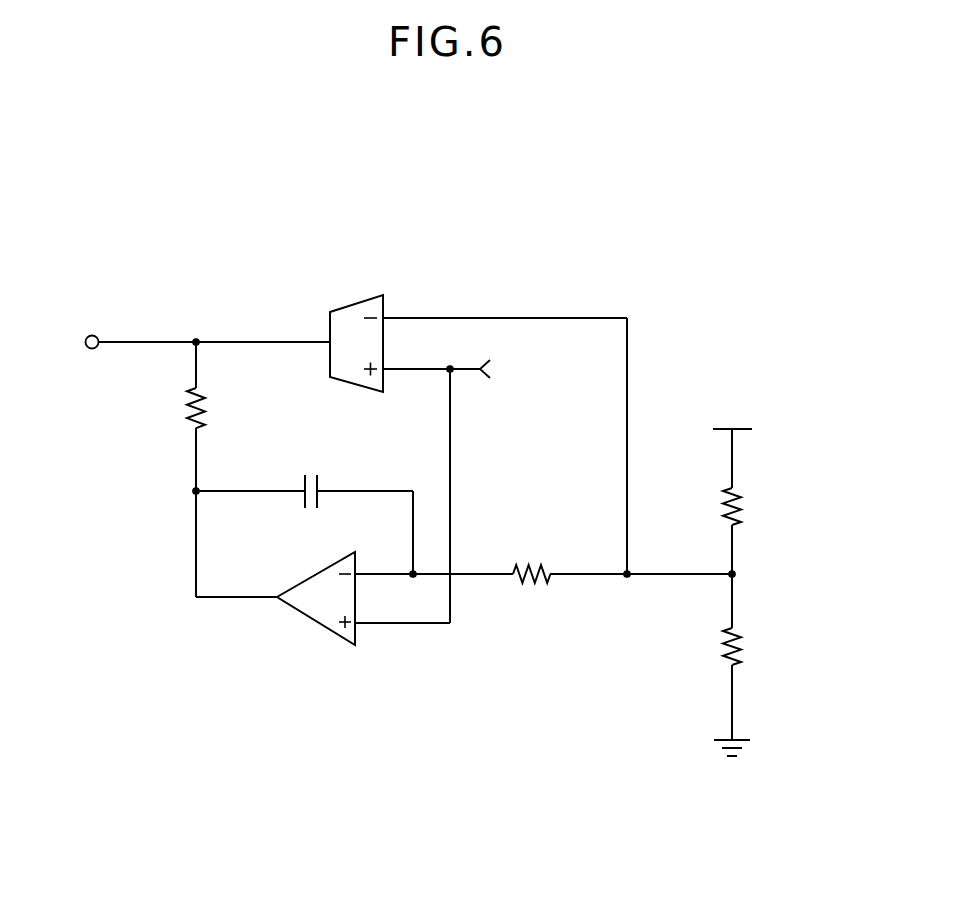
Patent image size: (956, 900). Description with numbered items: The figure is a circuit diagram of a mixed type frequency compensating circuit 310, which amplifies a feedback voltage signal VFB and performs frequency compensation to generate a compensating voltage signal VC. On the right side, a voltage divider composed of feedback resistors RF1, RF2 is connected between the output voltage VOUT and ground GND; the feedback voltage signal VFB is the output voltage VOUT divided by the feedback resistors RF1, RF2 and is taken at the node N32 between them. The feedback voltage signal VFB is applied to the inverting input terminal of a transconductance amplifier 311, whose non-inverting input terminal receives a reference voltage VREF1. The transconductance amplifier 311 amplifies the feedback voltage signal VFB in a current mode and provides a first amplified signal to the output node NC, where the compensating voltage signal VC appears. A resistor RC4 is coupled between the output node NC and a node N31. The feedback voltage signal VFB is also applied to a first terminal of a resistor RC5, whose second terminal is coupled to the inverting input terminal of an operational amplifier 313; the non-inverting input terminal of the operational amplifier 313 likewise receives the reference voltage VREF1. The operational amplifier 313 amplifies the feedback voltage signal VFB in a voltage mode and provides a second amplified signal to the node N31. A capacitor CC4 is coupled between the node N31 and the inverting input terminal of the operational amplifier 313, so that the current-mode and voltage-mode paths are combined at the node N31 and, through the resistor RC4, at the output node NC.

The mixed type frequency compensating circuit 310 is at (445, 180).
The transconductance amplifier 311 is at (358, 297).
The operational amplifier 313 is at (317, 572).
The output node NC is at (196, 342).
The compensating voltage signal VC is at (260, 329).
The resistor RC4 is at (219, 469).
The resistor RC5 is at (621, 560).
The capacitor CC4 is at (306, 514).
The node N31 is at (196, 491).
The feedback node N32 is at (740, 575).
The reference voltage VREF1 is at (457, 491).
The feedback voltage signal VFB is at (668, 558).
The output voltage VOUT is at (735, 445).
The feedback resistor RF1 is at (710, 558).
The feedback resistor RF2 is at (708, 684).
The ground GND is at (736, 764).